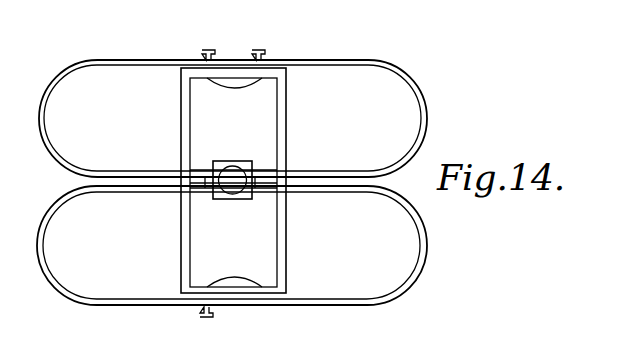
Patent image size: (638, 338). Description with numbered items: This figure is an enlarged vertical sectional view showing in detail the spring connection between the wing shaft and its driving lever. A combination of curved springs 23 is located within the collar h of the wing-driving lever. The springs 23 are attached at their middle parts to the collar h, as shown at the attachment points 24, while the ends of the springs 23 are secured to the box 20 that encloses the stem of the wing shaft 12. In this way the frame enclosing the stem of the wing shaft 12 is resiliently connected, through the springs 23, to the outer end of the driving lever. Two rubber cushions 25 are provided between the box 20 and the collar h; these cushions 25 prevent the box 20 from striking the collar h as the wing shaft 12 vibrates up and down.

The curved springs 23 is at (43, 103).
The collar h is at (283, 125).
The rubber cushions 25 is at (235, 82).
The spring attachment points 24 is at (258, 52).
The box 20 is at (232, 143).
The wing shaft 12 is at (232, 188).